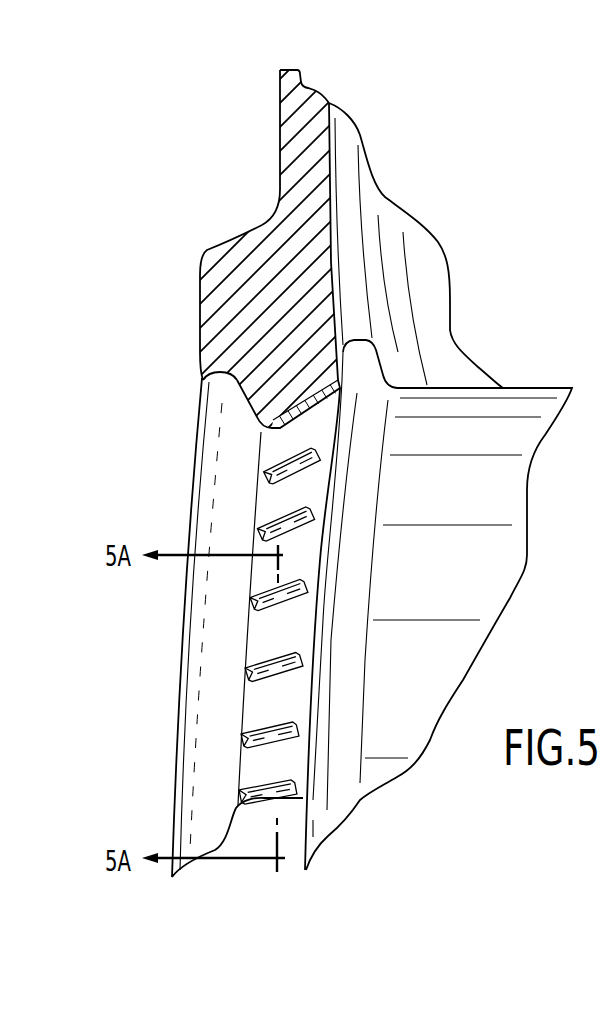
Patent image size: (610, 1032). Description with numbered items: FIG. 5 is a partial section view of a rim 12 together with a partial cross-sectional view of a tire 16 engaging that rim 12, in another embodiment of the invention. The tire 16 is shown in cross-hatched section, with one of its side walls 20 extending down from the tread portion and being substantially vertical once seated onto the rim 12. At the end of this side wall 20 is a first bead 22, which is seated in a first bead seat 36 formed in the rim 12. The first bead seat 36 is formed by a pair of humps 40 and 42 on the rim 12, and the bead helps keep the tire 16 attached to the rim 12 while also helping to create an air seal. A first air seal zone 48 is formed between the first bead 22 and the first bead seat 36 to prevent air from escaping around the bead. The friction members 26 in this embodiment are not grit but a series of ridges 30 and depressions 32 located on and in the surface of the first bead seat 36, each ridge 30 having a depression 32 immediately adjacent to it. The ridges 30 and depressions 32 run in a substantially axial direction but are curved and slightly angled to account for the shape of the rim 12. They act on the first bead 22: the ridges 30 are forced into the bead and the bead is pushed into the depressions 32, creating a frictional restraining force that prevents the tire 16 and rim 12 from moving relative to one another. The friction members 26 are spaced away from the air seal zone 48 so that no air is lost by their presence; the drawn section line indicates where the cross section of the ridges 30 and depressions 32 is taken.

The rim 12 is at (483, 552).
The tire 16 is at (285, 98).
The side walls 20 is at (288, 156).
The first bead 22 is at (241, 279).
The friction members 26 is at (280, 526).
The ridges 30 is at (268, 736).
The depressions 32 is at (266, 752).
The first bead seat 36 is at (256, 433).
The hump 40 is at (363, 358).
The hump 42 is at (213, 386).
The first air seal zone 48 is at (204, 399).